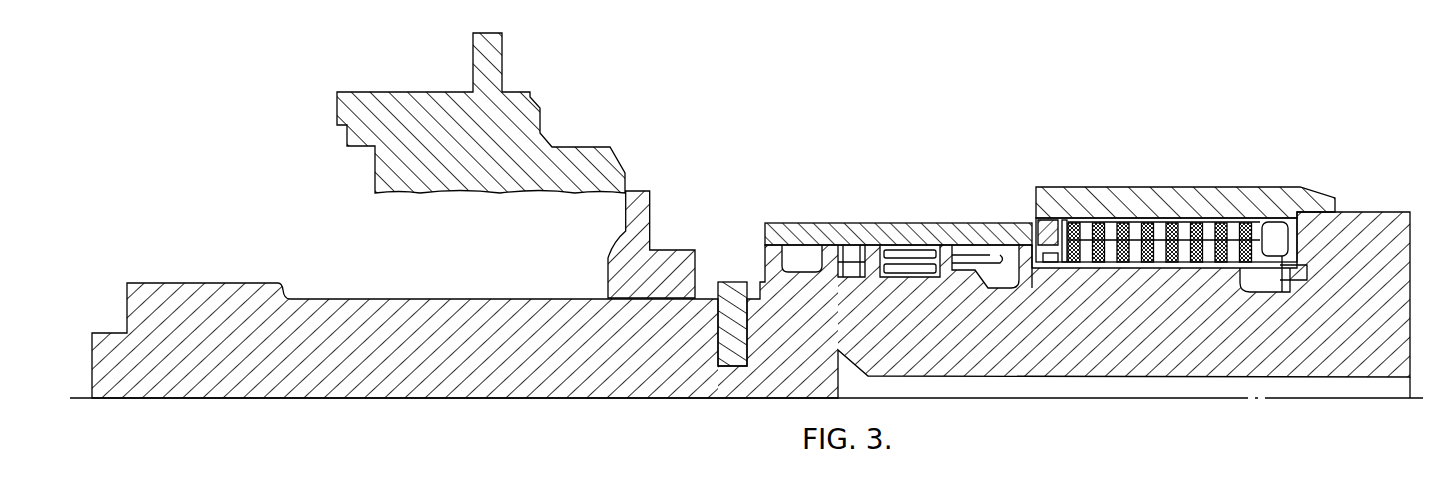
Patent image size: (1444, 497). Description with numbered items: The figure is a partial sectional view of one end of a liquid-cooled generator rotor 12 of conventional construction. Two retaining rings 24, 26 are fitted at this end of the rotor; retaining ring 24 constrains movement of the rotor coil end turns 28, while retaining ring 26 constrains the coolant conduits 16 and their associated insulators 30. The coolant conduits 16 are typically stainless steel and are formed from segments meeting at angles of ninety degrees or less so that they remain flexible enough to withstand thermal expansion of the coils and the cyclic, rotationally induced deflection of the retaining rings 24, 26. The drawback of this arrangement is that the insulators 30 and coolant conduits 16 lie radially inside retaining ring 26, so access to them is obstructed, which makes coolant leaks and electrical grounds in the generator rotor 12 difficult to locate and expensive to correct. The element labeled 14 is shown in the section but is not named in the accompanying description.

The generator rotor 12 is at (1158, 390).
The bearing housing 14 is at (796, 250).
The coolant conduits 16 is at (972, 258).
The retaining ring 24 is at (1203, 188).
The retaining ring 26 is at (866, 232).
The rotor coil end turns 28 is at (1195, 264).
The insulators 30 is at (922, 266).